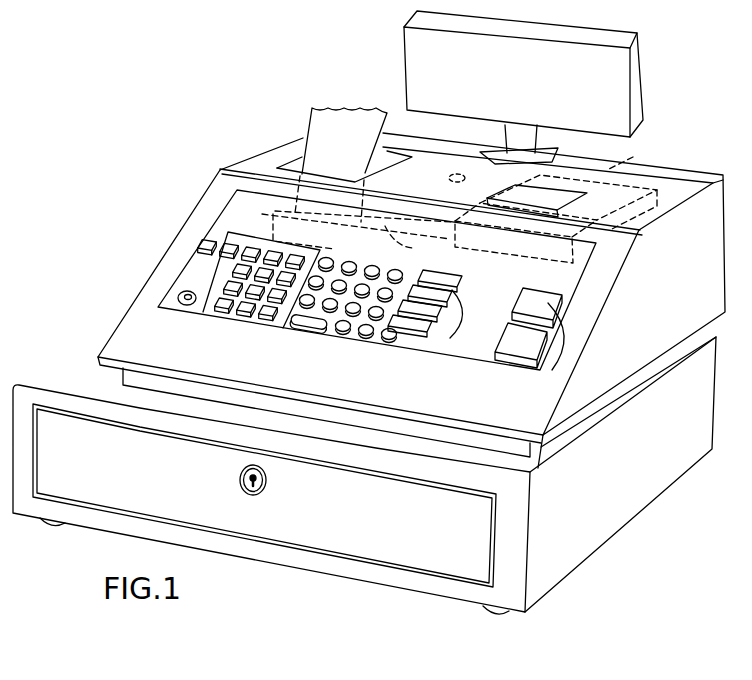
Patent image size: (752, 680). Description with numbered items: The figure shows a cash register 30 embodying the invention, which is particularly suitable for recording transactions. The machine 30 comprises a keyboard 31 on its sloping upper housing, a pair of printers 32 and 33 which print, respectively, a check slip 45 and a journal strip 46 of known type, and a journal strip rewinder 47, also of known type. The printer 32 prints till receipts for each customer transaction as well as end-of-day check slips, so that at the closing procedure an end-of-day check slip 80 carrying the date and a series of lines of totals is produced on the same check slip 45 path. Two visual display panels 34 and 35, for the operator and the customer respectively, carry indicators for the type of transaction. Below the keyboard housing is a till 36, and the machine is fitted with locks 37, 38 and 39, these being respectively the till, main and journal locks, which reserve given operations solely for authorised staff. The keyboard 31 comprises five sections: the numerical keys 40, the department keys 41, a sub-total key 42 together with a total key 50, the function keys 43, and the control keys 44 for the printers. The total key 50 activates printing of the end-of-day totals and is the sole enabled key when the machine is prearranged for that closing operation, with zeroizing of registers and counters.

The cash register 30 is at (180, 179).
The keyboard 31 is at (419, 374).
The printer 32 is at (466, 273).
The printer 33 is at (578, 254).
The visual display panel 34 is at (243, 212).
The visual display panel 35 is at (612, 110).
The till 36 is at (469, 543).
The till lock 37 is at (244, 492).
The main lock 38 is at (183, 306).
The journal lock 39 is at (447, 179).
The numerical keys 40 is at (315, 340).
The department keys 41 is at (434, 312).
The sub-total key 42 is at (552, 371).
The function keys 43 is at (236, 323).
The control keys 44 is at (230, 250).
The check slip 45 is at (341, 132).
The journal strip 46 is at (633, 157).
The journal strip rewinder 47 is at (650, 207).
The total key 50 is at (518, 348).
The end-of-day check slip 80 is at (337, 133).